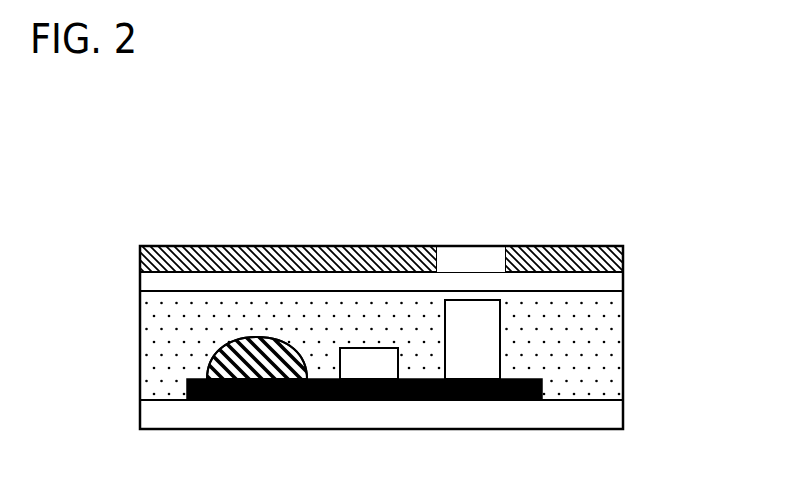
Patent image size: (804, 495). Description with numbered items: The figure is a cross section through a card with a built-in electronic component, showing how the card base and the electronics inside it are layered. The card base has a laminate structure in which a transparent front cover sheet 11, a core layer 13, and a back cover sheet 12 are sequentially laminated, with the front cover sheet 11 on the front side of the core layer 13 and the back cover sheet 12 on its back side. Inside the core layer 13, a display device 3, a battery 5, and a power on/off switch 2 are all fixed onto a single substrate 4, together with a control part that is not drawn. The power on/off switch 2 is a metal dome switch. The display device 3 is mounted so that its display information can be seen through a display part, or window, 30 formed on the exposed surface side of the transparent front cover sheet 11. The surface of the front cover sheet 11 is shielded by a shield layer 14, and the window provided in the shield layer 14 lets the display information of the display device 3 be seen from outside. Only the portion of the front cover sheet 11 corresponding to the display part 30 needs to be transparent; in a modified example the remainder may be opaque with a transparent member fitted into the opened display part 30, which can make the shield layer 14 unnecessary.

The power on/off switch 2 is at (258, 337).
The display device 3 is at (482, 302).
The substrate 4 is at (222, 403).
The battery 5 is at (370, 348).
The front cover sheet 11 is at (612, 283).
The back cover sheet 12 is at (577, 413).
The core layer 13 is at (593, 338).
The shield layer 14 is at (176, 267).
The display part (window) 30 is at (477, 263).